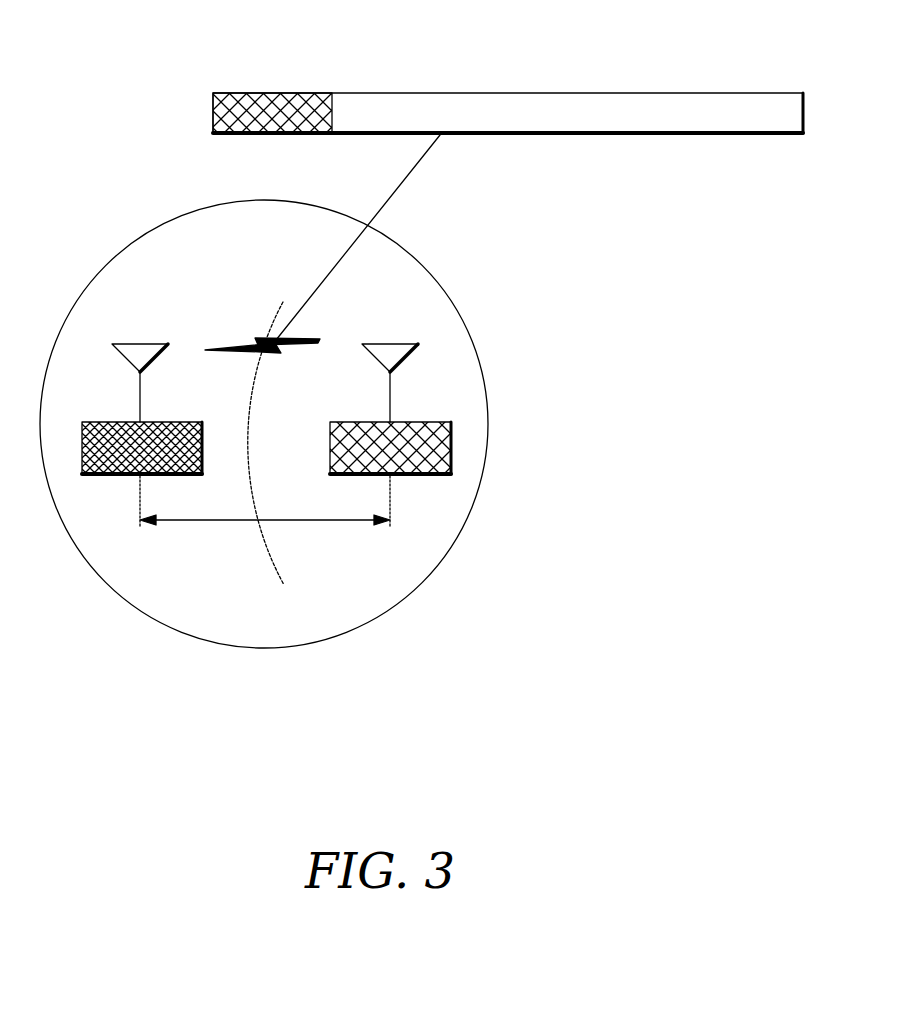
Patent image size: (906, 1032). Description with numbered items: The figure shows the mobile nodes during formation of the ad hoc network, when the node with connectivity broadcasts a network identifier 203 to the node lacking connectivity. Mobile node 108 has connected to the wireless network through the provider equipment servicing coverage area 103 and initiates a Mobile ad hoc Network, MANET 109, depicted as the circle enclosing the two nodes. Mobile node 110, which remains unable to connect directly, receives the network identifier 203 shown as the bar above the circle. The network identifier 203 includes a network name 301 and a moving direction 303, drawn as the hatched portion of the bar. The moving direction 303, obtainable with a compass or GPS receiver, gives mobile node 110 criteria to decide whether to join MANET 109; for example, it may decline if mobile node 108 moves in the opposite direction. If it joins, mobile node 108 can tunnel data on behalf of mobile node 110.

The network identifier 203 is at (508, 96).
The network name 301 is at (508, 137).
The moving direction 303 is at (267, 100).
The Mobile ad hoc Network (MANET) 109 is at (488, 425).
The mobile node 110 is at (183, 421).
The mobile node 108 is at (350, 421).
The coverage area 103 is at (262, 542).